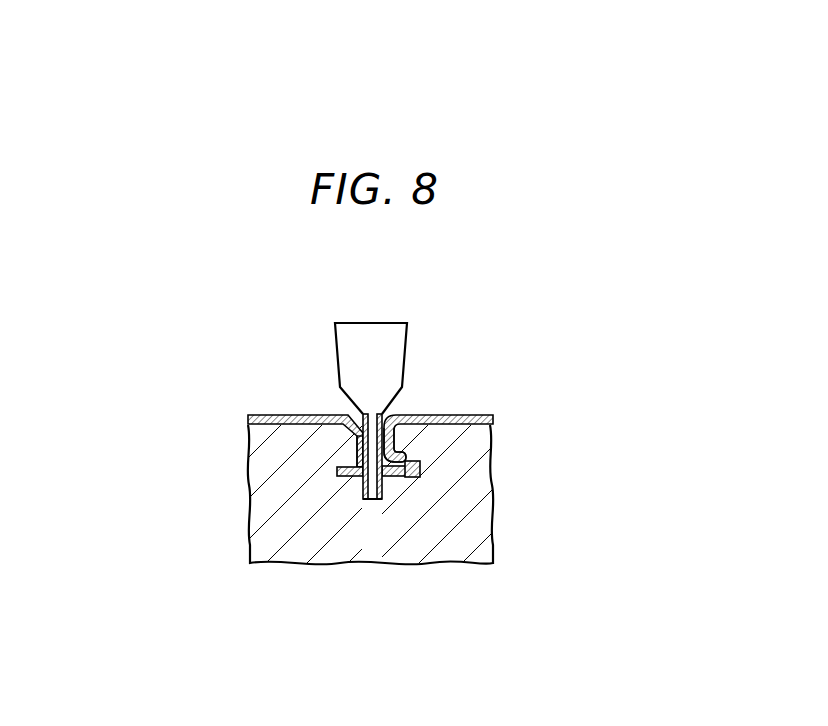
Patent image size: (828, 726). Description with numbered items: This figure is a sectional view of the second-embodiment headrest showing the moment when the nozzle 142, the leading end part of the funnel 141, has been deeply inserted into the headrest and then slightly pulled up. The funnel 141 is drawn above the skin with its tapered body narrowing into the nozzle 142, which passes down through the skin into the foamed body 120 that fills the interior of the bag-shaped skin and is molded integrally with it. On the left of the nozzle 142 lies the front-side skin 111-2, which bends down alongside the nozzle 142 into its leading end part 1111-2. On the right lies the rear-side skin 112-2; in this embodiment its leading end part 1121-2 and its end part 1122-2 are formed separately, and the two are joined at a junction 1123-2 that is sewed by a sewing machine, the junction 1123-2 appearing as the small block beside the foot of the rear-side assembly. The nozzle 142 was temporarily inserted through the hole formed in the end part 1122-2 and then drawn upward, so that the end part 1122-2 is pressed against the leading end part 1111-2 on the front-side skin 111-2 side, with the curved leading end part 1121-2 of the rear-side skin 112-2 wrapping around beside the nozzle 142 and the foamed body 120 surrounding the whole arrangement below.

The funnel 141 is at (393, 338).
The nozzle 142 is at (371, 499).
The front-side skin 111-2 is at (249, 417).
The rear-side skin 112-2 is at (496, 414).
The leading end part 1111-2 is at (357, 446).
The leading end part 1121-2 is at (384, 447).
The end part 1122-2 is at (352, 476).
The junction 1123-2 is at (405, 478).
The foamed body 120 is at (467, 527).